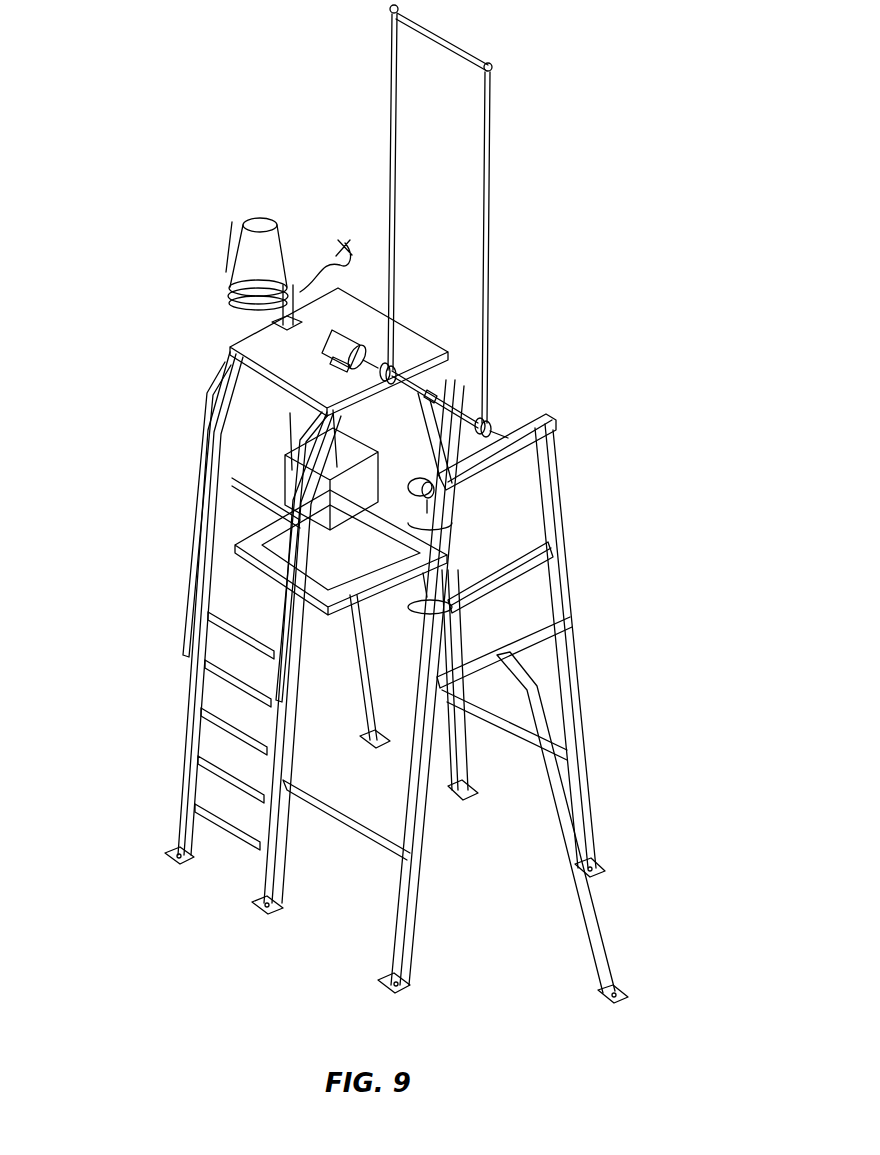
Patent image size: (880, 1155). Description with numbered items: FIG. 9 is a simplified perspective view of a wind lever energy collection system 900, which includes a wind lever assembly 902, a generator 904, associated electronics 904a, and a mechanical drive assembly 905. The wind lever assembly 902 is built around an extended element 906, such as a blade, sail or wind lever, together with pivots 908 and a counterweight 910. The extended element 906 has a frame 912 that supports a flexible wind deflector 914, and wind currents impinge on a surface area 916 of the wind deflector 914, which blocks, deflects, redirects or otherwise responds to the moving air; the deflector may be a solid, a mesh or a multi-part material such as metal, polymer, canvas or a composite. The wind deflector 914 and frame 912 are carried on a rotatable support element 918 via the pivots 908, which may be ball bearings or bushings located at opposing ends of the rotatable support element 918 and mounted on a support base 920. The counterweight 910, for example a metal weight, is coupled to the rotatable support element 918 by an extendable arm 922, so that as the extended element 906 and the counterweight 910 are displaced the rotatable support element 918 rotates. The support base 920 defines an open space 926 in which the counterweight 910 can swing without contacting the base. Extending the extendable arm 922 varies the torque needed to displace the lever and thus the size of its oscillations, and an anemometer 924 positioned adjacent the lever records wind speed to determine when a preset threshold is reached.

The wind lever energy collection system 900 is at (656, 180).
The wind lever assembly 902 is at (567, 57).
The generator 904 is at (336, 347).
The associated electronics 904a is at (365, 470).
The mechanical drive assembly 905 is at (230, 356).
The extended element 906 is at (352, 178).
The pivots 908 is at (490, 420).
The counterweight 910 is at (413, 613).
The frame 912 is at (390, 50).
The flexible wind deflector 914 is at (413, 97).
The surface area 916 is at (462, 309).
The rotatable support element 918 is at (457, 403).
The support base 920 is at (413, 750).
The extendable arm 922 is at (437, 537).
The anemometer 924 is at (166, 256).
The open space 926 is at (350, 683).